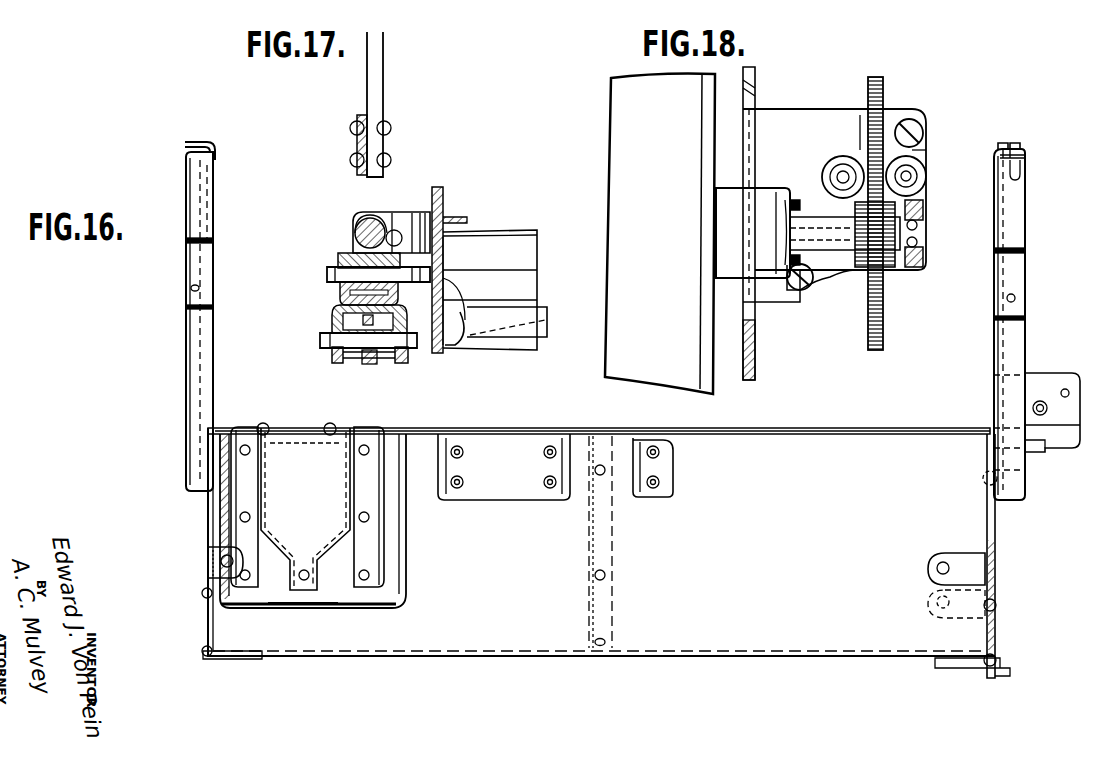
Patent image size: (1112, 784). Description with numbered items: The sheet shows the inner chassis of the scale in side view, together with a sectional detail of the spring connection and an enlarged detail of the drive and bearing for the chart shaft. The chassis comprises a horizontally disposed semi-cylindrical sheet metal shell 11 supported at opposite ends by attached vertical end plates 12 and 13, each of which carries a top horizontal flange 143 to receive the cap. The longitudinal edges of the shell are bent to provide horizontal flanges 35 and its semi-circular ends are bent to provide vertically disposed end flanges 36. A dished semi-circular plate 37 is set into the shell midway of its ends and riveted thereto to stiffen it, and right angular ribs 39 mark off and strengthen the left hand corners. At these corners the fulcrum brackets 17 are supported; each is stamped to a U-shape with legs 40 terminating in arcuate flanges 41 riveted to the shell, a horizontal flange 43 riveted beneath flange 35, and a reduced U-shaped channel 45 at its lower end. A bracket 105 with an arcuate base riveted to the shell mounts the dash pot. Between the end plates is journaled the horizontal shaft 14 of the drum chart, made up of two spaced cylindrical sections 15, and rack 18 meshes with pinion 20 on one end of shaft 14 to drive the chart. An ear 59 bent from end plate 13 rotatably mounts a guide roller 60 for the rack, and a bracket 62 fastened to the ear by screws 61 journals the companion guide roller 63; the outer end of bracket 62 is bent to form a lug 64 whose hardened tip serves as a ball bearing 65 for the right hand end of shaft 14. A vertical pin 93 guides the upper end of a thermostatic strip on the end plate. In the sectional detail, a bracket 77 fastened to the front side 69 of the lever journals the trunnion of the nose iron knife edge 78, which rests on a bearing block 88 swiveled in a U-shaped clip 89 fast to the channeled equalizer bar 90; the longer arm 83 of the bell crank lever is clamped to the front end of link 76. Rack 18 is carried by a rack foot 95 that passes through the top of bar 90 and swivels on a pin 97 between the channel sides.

In FIG. 16, the semi-cylindrical shell 11 is at (690, 608).
In FIG. 16, the end plate 12 is at (212, 280).
In FIG. 16, the end plate 13 is at (1000, 285).
In FIG. 18, the end plate 13 is at (755, 100).
In FIG. 18, the shaft 14 is at (920, 232).
In FIG. 18, the cylindrical section 15 is at (618, 133).
In FIG. 16, the fulcrum bracket 17 is at (290, 447).
In FIG. 17, the rack 18 is at (373, 97).
In FIG. 18, the rack 18 is at (884, 87).
In FIG. 18, the pinion 20 is at (866, 238).
In FIG. 16, the horizontal flange 35 is at (733, 436).
In FIG. 16, the end flange 36 is at (215, 520).
In FIG. 16, the dished semi-circular plate 37 is at (610, 549).
In FIG. 16, the right angular rib 39 is at (398, 582).
In FIG. 16, the leg 40 is at (350, 560).
In FIG. 16, the arcuate flange 41 is at (240, 494).
In FIG. 16, the horizontal flange 43 is at (297, 433).
In FIG. 16, the reduced U-shaped channel 45 is at (298, 584).
In FIG. 16, the ear 59 is at (1054, 380).
In FIG. 18, the ear 59 is at (809, 116).
In FIG. 16, the guide roller 60 is at (1042, 416).
In FIG. 18, the guide roller 60 is at (834, 165).
In FIG. 18, the screw 61 is at (924, 127).
In FIG. 18, the bracket 62 is at (928, 150).
In FIG. 18, the companion guide roller 63 is at (925, 174).
In FIG. 18, the lug 64 is at (924, 204).
In FIG. 18, the ball bearing 65 is at (924, 252).
In FIG. 17, the front side 69 is at (457, 248).
In FIG. 17, the link 76 is at (539, 320).
In FIG. 17, the bracket 77 is at (444, 200).
In FIG. 17, the nose iron knife edge 78 is at (356, 226).
In FIG. 17, the longer arm 83 is at (332, 320).
In FIG. 17, the bearing block 88 is at (340, 254).
In FIG. 17, the U-shaped clip 89 is at (340, 290).
In FIG. 17, the equalizer bar 90 is at (330, 328).
In FIG. 16, the vertical pin 93 is at (1026, 158).
In FIG. 17, the rack foot 95 is at (357, 146).
In FIG. 17, the pin 97 is at (325, 347).
In FIG. 16, the bracket 105 is at (477, 485).
In FIG. 16, the top horizontal flange 143 is at (192, 142).